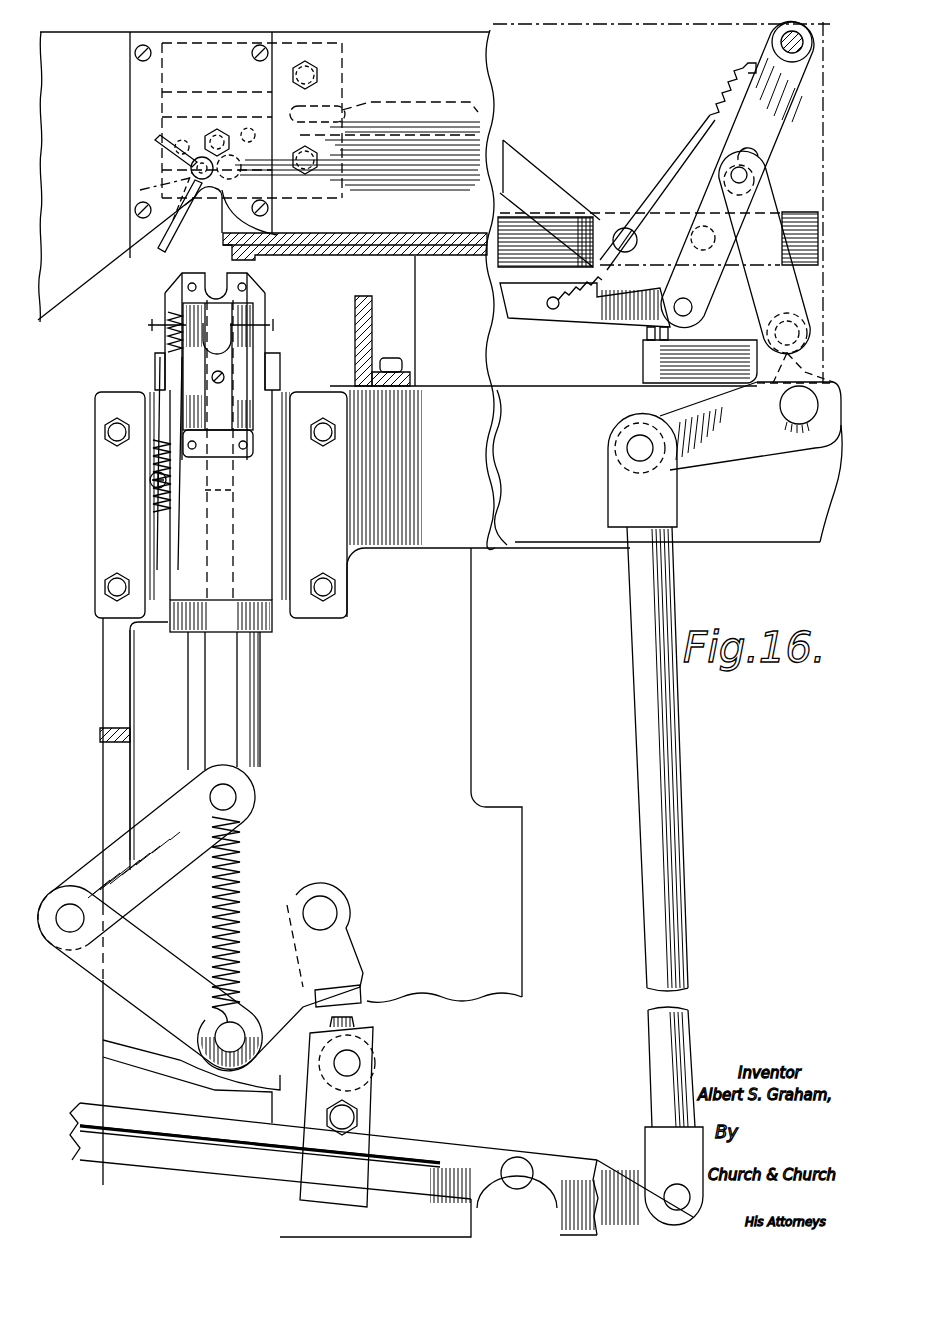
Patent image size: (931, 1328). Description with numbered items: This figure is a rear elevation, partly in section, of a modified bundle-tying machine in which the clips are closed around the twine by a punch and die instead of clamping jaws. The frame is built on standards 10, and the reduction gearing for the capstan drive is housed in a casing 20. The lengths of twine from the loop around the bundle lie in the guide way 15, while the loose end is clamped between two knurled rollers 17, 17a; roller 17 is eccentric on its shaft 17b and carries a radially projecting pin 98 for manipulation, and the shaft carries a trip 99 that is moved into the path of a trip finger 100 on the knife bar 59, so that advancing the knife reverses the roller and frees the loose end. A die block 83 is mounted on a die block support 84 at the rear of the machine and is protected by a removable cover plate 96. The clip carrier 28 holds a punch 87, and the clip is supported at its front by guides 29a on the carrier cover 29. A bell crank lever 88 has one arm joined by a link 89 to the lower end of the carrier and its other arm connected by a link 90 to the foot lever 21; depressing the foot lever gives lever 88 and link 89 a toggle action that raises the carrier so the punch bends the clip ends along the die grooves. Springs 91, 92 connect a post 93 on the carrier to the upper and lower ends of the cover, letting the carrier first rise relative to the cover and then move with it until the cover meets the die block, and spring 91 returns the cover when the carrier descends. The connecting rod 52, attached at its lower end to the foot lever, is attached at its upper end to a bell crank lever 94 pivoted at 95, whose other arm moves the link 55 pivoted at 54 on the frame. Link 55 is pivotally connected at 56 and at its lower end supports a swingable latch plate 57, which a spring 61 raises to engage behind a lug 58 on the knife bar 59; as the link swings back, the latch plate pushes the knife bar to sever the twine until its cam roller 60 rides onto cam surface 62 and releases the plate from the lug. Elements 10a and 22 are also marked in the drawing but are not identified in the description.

The standards 10 is at (107, 745).
The slide block 10a is at (155, 620).
The guide way 15 is at (231, 211).
The knurled roller 17 is at (190, 172).
The knurled roller 17a is at (242, 164).
The shaft 17b is at (214, 128).
The casing 20 is at (210, 325).
The foot lever 21 is at (417, 1144).
The slider 22 is at (232, 347).
The carrier 28 is at (255, 378).
The carrier cover 29 is at (263, 300).
The guides 29a is at (252, 276).
The connecting rod 52 is at (638, 676).
The pivot 54 is at (771, 42).
The link 55 is at (737, 174).
The pivot connection 56 is at (748, 177).
The latch plate 57 is at (600, 316).
The lug 58 is at (640, 239).
The knife bar 59 is at (538, 230).
The cam roller 60 is at (787, 313).
The spring 61 is at (712, 112).
The cam surface 62 is at (755, 426).
The die block 83 is at (176, 182).
The die block support 84 is at (345, 198).
The punch 87 is at (226, 376).
The bell crank lever 88 is at (150, 977).
The link 89 is at (146, 857).
The link 90 is at (363, 1018).
The spring 91 is at (168, 338).
The spring 92 is at (160, 506).
The post 93 is at (152, 484).
The bell crank lever 94 is at (745, 449).
The pivot 95 is at (794, 424).
The cover plate 96 is at (133, 100).
The pin 98 is at (180, 218).
The trip 99 is at (158, 143).
The trip finger 100 is at (374, 114).